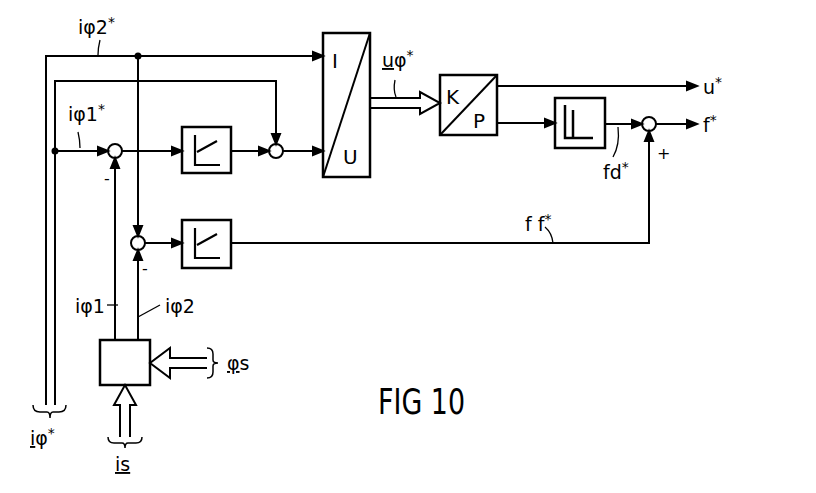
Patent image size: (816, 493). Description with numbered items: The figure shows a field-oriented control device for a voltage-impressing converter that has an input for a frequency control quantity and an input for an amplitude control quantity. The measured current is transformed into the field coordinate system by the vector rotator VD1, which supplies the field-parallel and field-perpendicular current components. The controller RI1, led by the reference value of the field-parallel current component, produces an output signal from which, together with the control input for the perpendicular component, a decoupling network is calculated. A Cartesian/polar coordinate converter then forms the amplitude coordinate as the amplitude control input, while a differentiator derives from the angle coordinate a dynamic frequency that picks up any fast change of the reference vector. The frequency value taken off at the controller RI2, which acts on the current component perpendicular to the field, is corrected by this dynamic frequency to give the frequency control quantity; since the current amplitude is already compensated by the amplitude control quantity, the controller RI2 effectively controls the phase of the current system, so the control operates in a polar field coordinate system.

The controller RI1 is at (211, 128).
The controller RI2 is at (207, 222).
The vector rotator VD1 is at (125, 362).